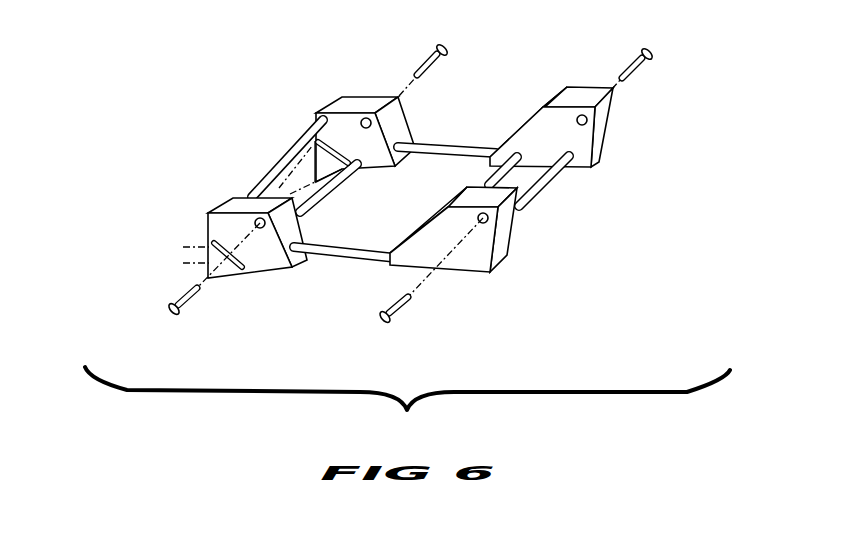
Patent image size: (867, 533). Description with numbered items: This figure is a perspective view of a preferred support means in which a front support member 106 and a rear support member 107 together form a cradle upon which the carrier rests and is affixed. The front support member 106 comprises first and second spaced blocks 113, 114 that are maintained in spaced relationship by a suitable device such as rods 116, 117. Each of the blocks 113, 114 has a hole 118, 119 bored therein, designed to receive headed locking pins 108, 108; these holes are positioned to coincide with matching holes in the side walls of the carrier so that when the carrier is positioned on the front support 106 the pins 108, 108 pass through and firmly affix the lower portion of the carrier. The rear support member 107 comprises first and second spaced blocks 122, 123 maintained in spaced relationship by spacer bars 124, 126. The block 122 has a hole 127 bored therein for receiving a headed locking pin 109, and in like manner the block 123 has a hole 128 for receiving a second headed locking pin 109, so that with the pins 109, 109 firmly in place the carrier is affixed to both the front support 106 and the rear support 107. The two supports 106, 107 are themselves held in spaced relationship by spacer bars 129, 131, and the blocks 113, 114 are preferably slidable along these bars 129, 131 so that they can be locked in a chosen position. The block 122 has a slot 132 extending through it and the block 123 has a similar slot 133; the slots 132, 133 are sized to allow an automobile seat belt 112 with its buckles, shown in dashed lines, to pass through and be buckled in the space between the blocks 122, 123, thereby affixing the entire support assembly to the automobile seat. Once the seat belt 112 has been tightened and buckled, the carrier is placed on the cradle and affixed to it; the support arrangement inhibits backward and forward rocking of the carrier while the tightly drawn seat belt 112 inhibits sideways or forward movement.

The front support member 106 is at (530, 259).
The rear support member 107 is at (254, 156).
The headed locking pin 108 is at (650, 46).
The headed locking pin 109 is at (437, 46).
The automobile seat belt 112 is at (226, 266).
The first block 113 is at (506, 256).
The second block 114 is at (598, 163).
The rod 116 is at (527, 166).
The rod 117 is at (536, 199).
The hole 118 is at (482, 224).
The hole 119 is at (583, 127).
The first block 122 is at (231, 204).
The second block 123 is at (364, 98).
The spacer bar 124 is at (300, 140).
The spacer bar 126 is at (334, 194).
The hole 127 is at (264, 231).
The hole 128 is at (371, 127).
The spacer bar 129 is at (367, 257).
The spacer bar 131 is at (462, 142).
The slot 132 is at (212, 243).
The slot 133 is at (333, 153).